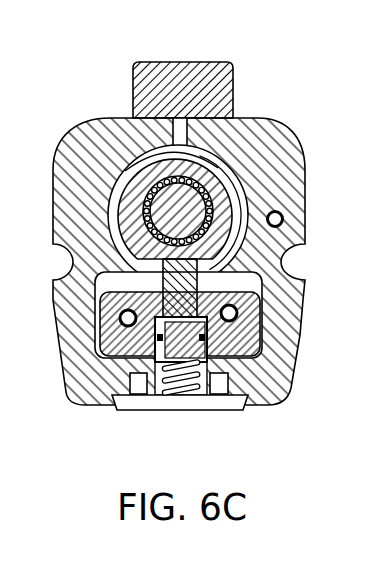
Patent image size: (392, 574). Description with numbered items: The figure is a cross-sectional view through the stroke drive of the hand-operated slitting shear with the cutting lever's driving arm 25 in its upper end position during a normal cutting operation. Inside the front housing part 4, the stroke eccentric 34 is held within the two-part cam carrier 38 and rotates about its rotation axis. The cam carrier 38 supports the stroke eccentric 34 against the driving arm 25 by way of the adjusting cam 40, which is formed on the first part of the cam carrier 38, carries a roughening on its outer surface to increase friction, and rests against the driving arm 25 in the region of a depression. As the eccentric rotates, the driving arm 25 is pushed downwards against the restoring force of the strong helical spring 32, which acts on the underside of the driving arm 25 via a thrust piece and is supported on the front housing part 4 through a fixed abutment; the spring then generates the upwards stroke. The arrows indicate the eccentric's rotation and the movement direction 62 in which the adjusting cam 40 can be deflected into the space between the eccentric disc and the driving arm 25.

The driving arm 25 is at (250, 250).
The adjusting cam 40 is at (222, 167).
The cam carrier 38 is at (120, 172).
The stroke eccentric 34 is at (196, 213).
The movement direction 62 is at (204, 250).
The helical spring 32 is at (172, 395).
The front housing part 4 is at (0, 243).